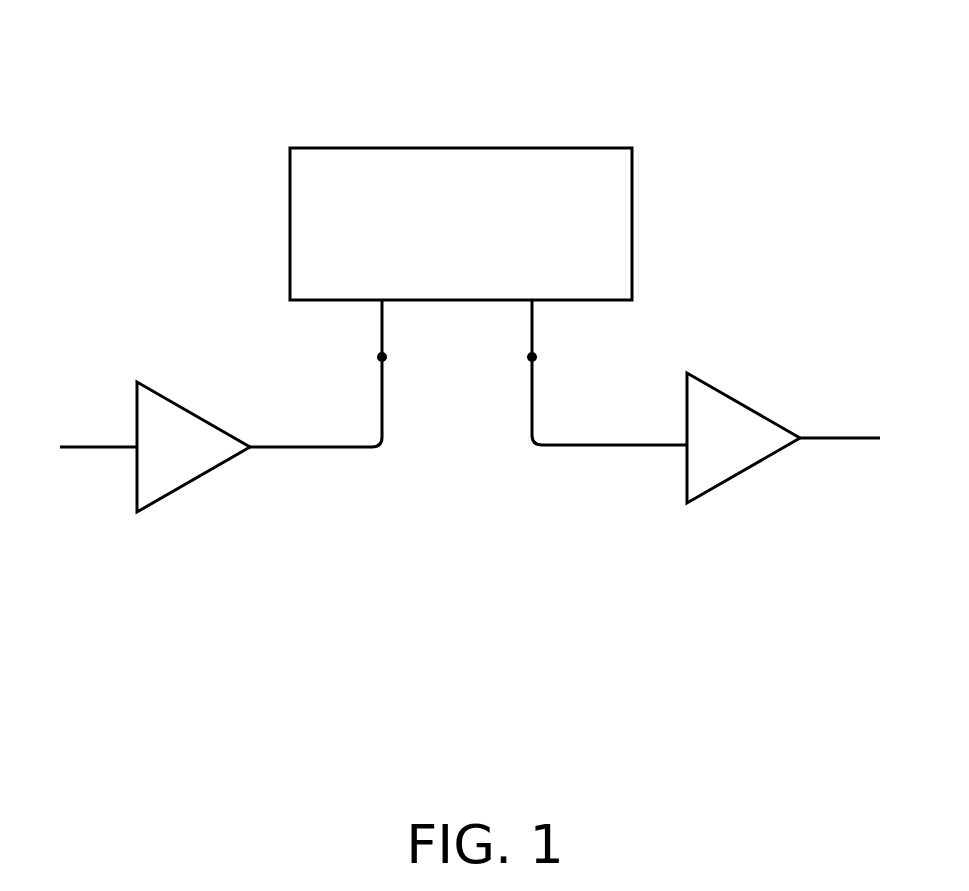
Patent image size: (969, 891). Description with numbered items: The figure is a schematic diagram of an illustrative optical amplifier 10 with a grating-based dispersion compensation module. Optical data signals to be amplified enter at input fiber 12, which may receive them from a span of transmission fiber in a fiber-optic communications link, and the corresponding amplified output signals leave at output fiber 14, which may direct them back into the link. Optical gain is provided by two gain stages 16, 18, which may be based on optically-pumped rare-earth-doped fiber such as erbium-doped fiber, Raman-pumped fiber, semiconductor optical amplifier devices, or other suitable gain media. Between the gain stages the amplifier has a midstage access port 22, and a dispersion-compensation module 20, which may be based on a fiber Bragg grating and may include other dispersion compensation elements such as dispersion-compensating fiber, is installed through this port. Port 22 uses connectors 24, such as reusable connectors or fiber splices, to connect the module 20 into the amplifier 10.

The optical amplifier 10 is at (715, 72).
The input fiber 12 is at (70, 447).
The output fiber 14 is at (838, 442).
The gain stage 16 is at (178, 488).
The gain stage 18 is at (743, 470).
The dispersion-compensation module 20 is at (632, 233).
The midstage access port 22 is at (568, 358).
The connectors 24 is at (386, 359).